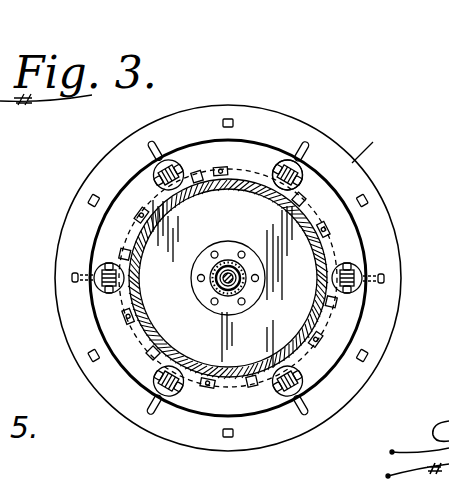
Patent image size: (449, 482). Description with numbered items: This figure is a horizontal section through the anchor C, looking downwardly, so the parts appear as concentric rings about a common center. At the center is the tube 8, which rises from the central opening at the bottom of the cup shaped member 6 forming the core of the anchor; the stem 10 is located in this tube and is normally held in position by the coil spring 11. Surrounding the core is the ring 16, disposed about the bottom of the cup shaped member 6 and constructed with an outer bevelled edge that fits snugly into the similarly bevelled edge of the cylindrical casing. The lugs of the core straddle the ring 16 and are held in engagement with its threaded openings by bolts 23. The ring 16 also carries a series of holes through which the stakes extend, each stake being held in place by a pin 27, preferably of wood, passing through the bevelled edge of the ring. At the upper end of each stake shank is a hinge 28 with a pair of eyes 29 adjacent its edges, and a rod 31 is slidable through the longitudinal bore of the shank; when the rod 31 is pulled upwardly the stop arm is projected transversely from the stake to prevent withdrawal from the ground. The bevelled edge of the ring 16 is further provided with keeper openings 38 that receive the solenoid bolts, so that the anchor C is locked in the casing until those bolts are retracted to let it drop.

The cup shaped member 6 is at (237, 201).
The tube 8 is at (230, 262).
The stem 10 is at (219, 281).
The coil spring 11 is at (226, 297).
The ring 16 is at (358, 182).
The bolts 23 is at (205, 385).
The pins 27 is at (70, 280).
The hinge 28 is at (305, 165).
The eyes 29 is at (303, 187).
The rod 31 is at (284, 165).
The keeper openings 38 is at (370, 198).
The anchor C is at (374, 140).